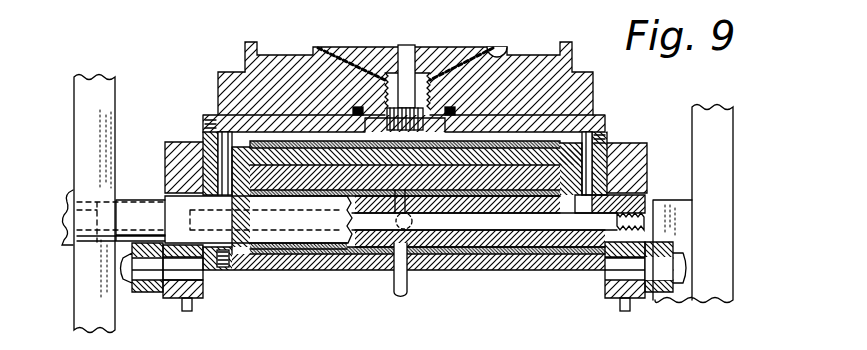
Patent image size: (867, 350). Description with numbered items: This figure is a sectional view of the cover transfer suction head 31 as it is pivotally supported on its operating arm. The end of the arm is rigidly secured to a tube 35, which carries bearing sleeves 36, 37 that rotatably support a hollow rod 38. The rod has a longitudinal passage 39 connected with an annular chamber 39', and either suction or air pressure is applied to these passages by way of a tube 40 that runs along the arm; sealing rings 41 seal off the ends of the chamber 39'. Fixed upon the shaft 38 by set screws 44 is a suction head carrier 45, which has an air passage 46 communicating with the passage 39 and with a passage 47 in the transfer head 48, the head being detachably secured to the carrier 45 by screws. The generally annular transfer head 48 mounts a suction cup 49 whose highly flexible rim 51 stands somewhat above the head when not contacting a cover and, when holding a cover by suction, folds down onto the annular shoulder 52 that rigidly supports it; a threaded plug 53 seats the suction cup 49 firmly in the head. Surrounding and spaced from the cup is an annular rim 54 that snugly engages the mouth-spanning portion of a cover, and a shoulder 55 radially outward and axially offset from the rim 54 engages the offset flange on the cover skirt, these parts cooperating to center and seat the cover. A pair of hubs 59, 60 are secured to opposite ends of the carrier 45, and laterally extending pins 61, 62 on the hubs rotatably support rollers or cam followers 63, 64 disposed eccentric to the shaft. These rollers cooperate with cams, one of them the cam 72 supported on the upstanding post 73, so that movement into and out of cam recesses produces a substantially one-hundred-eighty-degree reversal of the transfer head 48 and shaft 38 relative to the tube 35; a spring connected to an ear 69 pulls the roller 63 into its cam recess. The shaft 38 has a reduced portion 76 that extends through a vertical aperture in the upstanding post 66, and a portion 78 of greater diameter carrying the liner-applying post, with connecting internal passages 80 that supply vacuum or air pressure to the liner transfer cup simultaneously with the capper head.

The suction transfer head 31 is at (610, 57).
The tube 35 is at (332, 268).
The bearing sleeve 36 is at (305, 258).
The bearing sleeve 37 is at (525, 250).
The rod 38 is at (272, 233).
The longitudinal passage 39 is at (500, 252).
The annular chamber 39' is at (480, 269).
The tube 40 is at (380, 284).
The sealing ring 41 is at (258, 195).
The set screw 44 is at (222, 263).
The suction head carrier 45 is at (603, 123).
The air passage 46 is at (552, 143).
The passage 47 is at (410, 65).
The transfer head 48 is at (218, 91).
The suction cup 49 is at (355, 51).
The flexible rim 51 is at (485, 43).
The annular shoulder 52 is at (503, 49).
The threaded plug 53 is at (383, 51).
The annular rim 54 is at (562, 42).
The shoulder 55 is at (227, 70).
The hub 59 is at (640, 147).
The hub 60 is at (165, 155).
The pin 61 is at (173, 270).
The pin 62 is at (620, 268).
The roller 63 is at (142, 288).
The roller 64 is at (652, 292).
The upstanding post 66 is at (78, 94).
The ear 69 is at (186, 312).
The cam 72 is at (683, 220).
The upstanding post 73 is at (723, 152).
The reduced portion 76 is at (129, 200).
The shaft portion of greater diameter 78 is at (72, 195).
The internal passages 80 is at (70, 204).